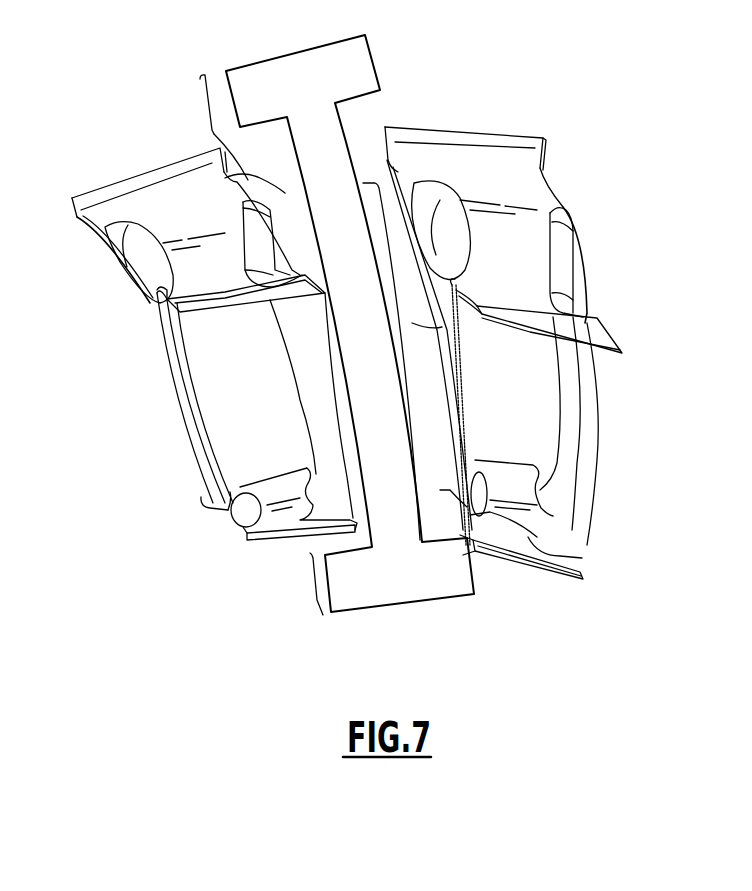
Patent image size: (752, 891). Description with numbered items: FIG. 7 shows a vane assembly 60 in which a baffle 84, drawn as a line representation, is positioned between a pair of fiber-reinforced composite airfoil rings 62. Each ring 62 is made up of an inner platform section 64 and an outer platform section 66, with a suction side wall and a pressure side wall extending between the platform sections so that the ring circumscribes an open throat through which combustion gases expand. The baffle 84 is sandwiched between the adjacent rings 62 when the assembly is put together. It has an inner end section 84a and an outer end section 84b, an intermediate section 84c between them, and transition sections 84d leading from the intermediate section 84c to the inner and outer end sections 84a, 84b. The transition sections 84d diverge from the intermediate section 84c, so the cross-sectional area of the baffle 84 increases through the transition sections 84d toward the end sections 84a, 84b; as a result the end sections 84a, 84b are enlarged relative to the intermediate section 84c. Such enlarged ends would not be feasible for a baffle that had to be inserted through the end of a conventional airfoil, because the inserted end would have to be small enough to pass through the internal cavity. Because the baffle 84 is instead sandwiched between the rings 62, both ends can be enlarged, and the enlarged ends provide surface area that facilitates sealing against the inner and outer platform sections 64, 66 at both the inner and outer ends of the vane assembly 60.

The vane assembly 60 is at (150, 500).
The fiber-reinforced composite airfoil ring 62 is at (88, 228).
The inner platform section 64 is at (262, 527).
The outer platform section 66 is at (122, 203).
The baffle 84 is at (381, 66).
The inner end section 84a is at (313, 590).
The outer end section 84b is at (202, 110).
The intermediate section 84c is at (458, 343).
The transition section 84d is at (240, 188).